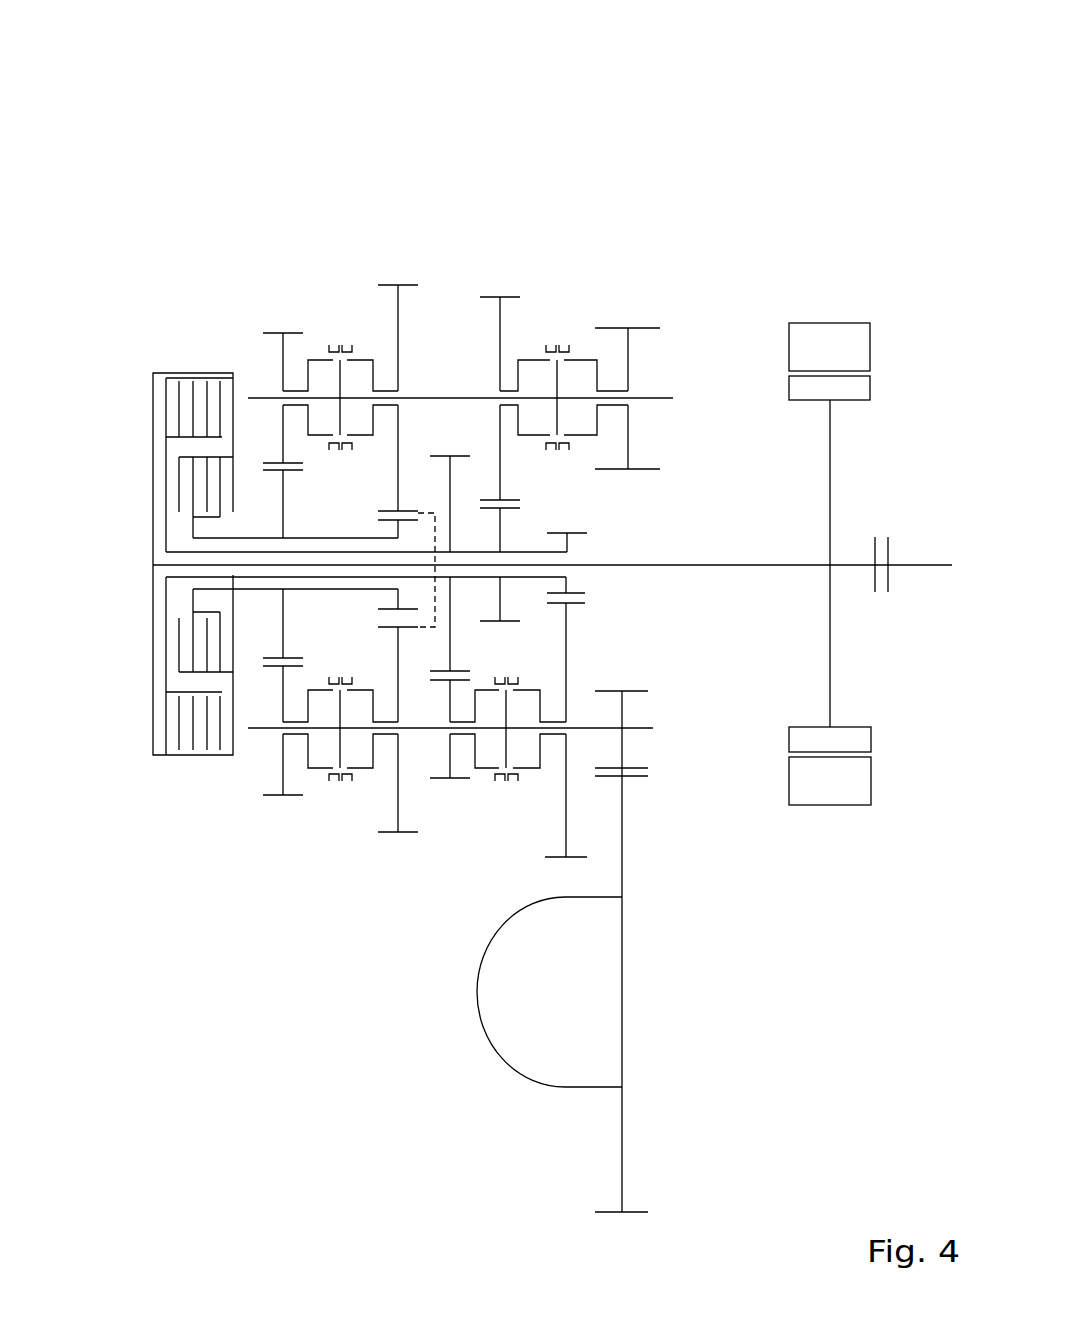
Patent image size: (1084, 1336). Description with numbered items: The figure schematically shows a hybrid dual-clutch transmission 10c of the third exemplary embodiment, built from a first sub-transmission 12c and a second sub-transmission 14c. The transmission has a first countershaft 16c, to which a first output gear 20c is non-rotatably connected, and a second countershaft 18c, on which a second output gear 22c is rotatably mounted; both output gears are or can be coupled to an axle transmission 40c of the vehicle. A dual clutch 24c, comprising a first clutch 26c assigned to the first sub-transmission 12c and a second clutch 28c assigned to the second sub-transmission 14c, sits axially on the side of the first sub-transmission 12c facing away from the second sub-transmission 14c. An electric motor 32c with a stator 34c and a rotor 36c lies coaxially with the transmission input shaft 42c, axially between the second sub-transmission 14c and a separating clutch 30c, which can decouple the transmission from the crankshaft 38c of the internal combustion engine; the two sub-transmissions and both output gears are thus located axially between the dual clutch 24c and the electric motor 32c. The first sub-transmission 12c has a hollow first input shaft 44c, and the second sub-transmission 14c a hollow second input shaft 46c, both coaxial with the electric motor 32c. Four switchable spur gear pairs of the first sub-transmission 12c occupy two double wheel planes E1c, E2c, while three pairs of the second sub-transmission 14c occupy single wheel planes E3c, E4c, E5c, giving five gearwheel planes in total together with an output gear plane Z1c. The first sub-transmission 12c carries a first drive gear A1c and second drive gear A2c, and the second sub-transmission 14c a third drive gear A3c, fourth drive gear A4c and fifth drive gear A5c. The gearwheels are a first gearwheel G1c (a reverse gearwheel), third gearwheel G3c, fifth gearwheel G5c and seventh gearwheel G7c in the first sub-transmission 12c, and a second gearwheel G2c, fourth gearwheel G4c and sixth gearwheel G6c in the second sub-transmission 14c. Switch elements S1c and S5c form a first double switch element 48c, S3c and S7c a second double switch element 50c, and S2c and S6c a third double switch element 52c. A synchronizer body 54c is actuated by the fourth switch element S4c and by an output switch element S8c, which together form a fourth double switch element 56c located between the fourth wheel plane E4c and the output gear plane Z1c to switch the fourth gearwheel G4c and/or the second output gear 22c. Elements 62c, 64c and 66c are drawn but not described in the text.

The hybrid dual-clutch transmission 10c is at (858, 118).
The first sub-transmission 12c is at (340, 150).
The second sub-transmission 14c is at (558, 133).
The first countershaft 16c is at (637, 728).
The second countershaft 18c is at (660, 396).
The first output gear 20c is at (625, 748).
The second output gear 22c is at (628, 353).
The dual clutch 24c is at (193, 363).
The first clutch 26c is at (147, 403).
The second clutch 28c is at (173, 495).
The separating clutch 30c is at (881, 597).
The electric motor 32c is at (830, 815).
The stator 34c is at (838, 793).
The rotor 36c is at (842, 738).
The crankshaft 38c is at (912, 563).
The axle transmission 40c is at (627, 915).
The transmission input shaft 42c is at (856, 563).
The first input shaft 44c is at (573, 552).
The second input shaft 46c is at (257, 537).
The first double switch element 48c is at (340, 787).
The second double switch element 50c is at (339, 343).
The third double switch element 52c is at (507, 787).
The synchronizer body 54c is at (550, 383).
The fourth double switch element 56c is at (525, 352).
The synchronizer 62c is at (566, 452).
The synchronizer 64c is at (532, 452).
The differential 66c is at (628, 993).
The first drive gear A1c is at (280, 606).
The second drive gear A2c is at (397, 592).
The third drive gear A3c is at (453, 478).
The fourth drive gear A4c is at (503, 520).
The fifth drive gear A5c is at (567, 585).
The first wheel plane E1c is at (313, 772).
The second wheel plane E2c is at (398, 840).
The third wheel plane E3c is at (450, 785).
The fourth wheel plane E4c is at (500, 285).
The fifth wheel plane E5c is at (564, 872).
The first gearwheel G1c is at (398, 638).
The second gearwheel G2c is at (567, 830).
The third gearwheel G3c is at (397, 330).
The fourth gearwheel G4c is at (500, 340).
The fifth gearwheel G5c is at (283, 773).
The sixth gearwheel G6c is at (450, 747).
The seventh gearwheel G7c is at (275, 350).
The first switch element S1c is at (367, 772).
The second switch element S2c is at (535, 772).
The third switch element S3c is at (365, 353).
The fourth switch element S4c is at (557, 335).
The fifth switch element S5c is at (283, 800).
The sixth switch element S6c is at (483, 772).
The seventh switch element S7c is at (315, 353).
The output switch element S8c is at (588, 350).
The output gear plane Z1c is at (628, 317).